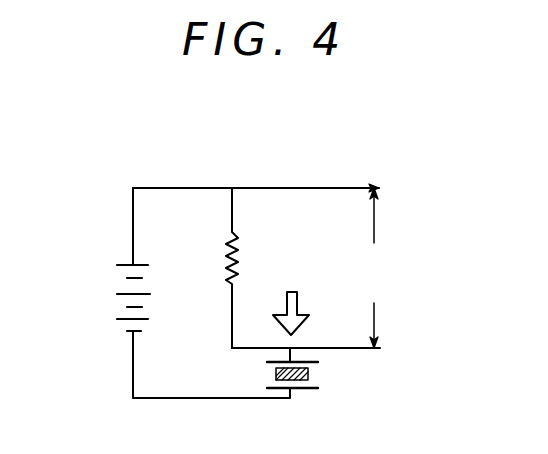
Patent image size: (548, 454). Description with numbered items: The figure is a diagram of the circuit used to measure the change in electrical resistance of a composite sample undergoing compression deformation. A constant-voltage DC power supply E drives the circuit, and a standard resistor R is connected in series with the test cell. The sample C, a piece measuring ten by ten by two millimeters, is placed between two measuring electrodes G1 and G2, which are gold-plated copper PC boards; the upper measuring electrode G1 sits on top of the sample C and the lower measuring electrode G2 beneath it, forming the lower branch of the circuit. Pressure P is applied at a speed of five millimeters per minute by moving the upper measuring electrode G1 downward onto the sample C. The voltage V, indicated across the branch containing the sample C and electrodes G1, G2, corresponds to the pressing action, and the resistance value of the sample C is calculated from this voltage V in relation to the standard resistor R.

The power supply E is at (125, 289).
The standard resistor R is at (229, 258).
The voltage V is at (375, 268).
The pressure P is at (291, 287).
The measuring electrode G1 is at (272, 361).
The sample C is at (312, 372).
The measuring electrode G2 is at (271, 393).